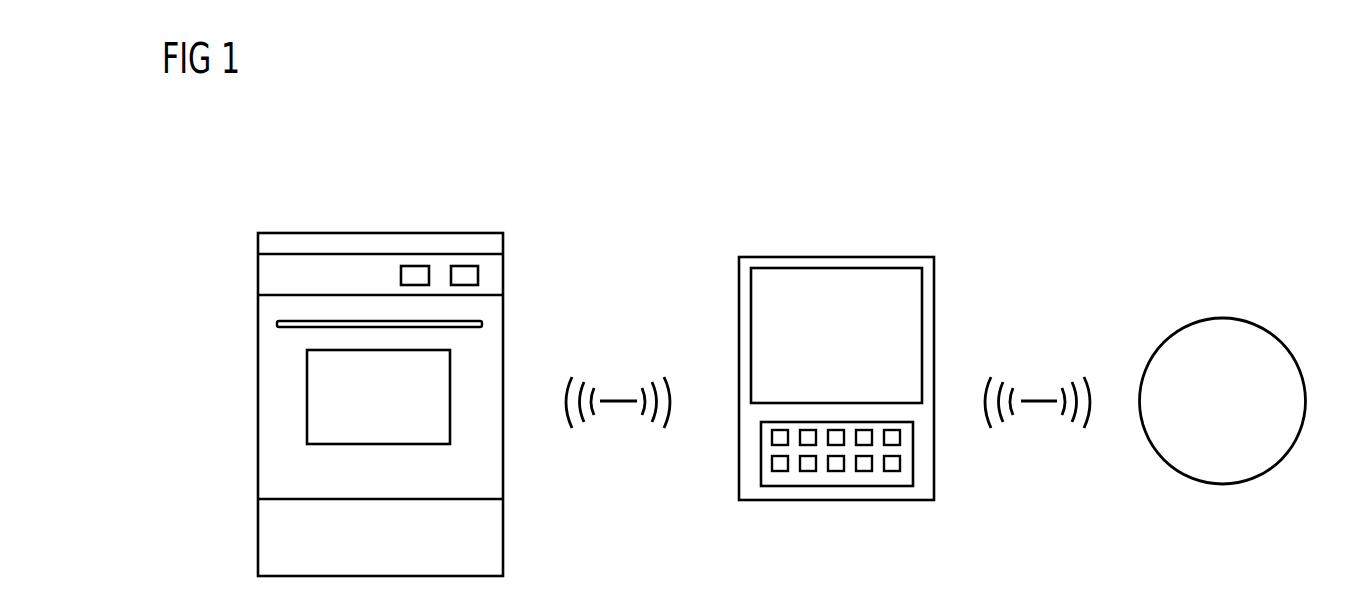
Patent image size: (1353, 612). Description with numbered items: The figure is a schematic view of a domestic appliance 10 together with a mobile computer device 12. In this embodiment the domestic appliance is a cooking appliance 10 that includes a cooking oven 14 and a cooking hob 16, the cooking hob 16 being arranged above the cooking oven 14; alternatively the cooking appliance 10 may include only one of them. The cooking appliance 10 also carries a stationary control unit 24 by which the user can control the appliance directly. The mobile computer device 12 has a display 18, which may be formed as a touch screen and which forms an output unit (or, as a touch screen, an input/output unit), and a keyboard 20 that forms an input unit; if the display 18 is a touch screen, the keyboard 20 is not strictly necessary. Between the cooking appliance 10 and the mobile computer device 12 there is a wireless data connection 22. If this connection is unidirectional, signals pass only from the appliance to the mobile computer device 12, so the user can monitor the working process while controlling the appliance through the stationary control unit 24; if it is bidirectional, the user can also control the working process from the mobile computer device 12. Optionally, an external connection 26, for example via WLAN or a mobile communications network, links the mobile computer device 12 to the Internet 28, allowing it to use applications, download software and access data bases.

The domestic appliance 10 is at (240, 212).
The mobile computer device 12 is at (766, 215).
The cooking oven 14 is at (276, 398).
The cooking hob 16 is at (419, 244).
The display 18 is at (880, 298).
The keyboard 20 is at (796, 476).
The wireless data connection 22 is at (617, 400).
The stationary control unit 24 is at (325, 274).
The external connection 26 is at (1037, 400).
The Internet 28 is at (1222, 355).